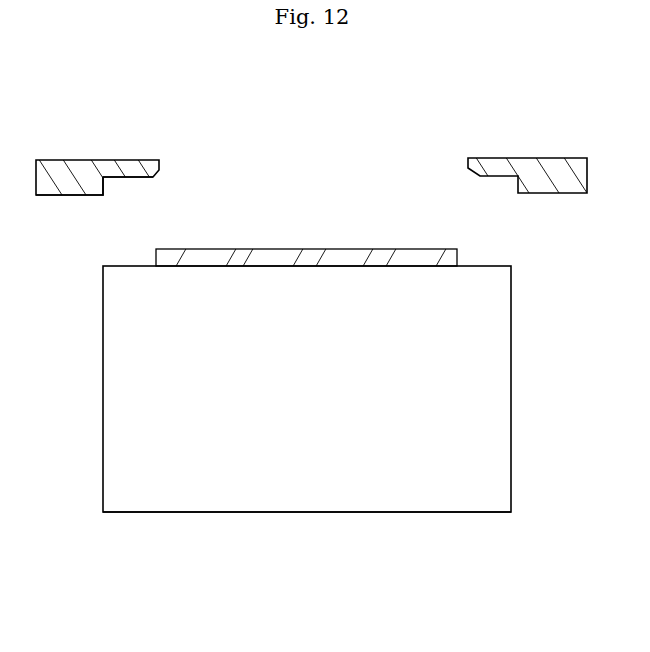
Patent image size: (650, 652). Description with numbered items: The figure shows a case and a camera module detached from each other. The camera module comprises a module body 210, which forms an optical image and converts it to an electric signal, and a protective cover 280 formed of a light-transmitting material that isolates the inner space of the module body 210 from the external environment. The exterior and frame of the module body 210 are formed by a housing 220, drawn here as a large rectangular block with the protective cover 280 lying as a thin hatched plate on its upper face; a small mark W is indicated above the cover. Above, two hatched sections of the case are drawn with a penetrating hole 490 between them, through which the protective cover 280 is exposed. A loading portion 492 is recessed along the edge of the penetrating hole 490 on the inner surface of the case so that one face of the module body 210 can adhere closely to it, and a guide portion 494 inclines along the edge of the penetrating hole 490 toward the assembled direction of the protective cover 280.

The penetrating hole 490 is at (161, 168).
The guide portion 494 is at (152, 175).
The loading portion 492 is at (123, 179).
The protective cover 280 is at (422, 248).
The width W is at (188, 248).
The housing 220 is at (497, 364).
The module body 210 is at (310, 513).